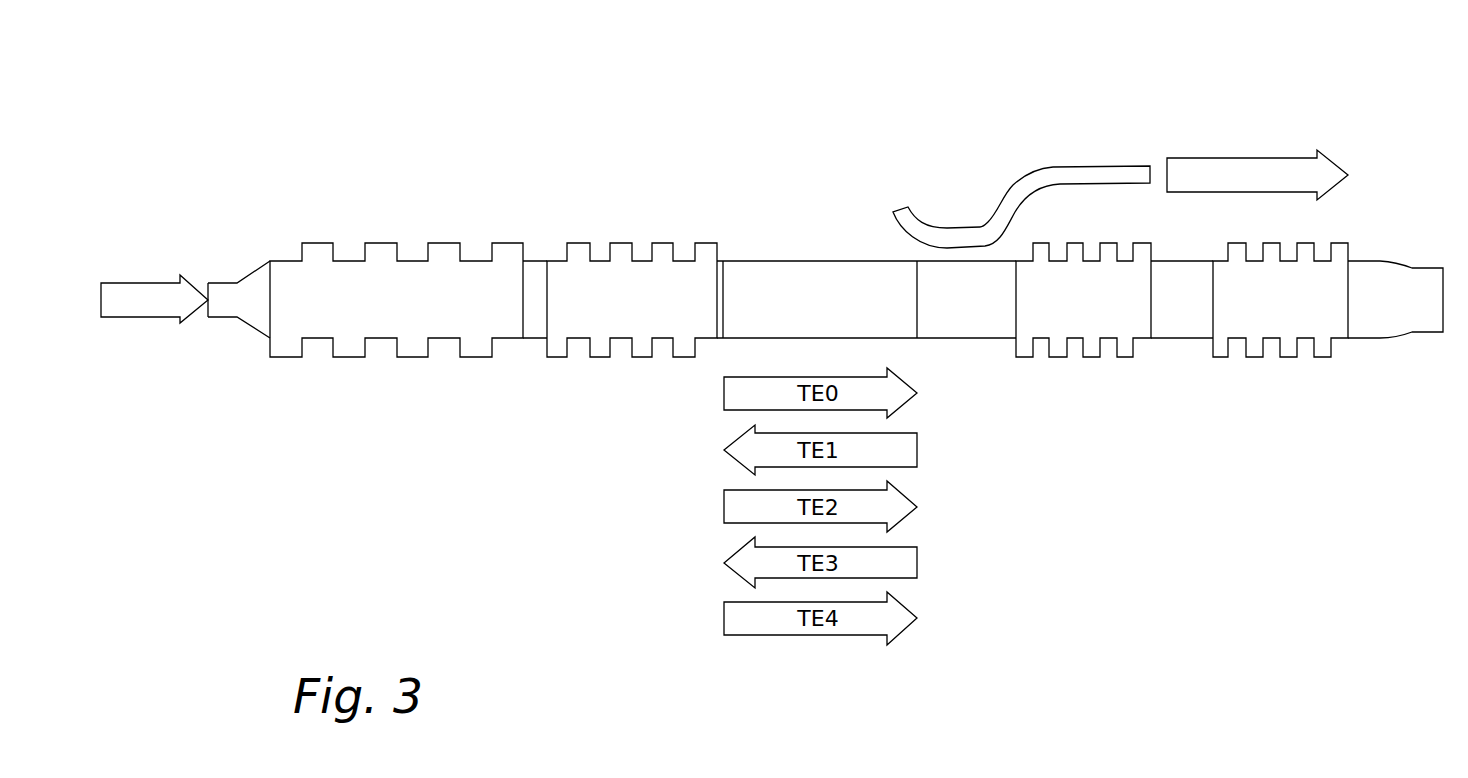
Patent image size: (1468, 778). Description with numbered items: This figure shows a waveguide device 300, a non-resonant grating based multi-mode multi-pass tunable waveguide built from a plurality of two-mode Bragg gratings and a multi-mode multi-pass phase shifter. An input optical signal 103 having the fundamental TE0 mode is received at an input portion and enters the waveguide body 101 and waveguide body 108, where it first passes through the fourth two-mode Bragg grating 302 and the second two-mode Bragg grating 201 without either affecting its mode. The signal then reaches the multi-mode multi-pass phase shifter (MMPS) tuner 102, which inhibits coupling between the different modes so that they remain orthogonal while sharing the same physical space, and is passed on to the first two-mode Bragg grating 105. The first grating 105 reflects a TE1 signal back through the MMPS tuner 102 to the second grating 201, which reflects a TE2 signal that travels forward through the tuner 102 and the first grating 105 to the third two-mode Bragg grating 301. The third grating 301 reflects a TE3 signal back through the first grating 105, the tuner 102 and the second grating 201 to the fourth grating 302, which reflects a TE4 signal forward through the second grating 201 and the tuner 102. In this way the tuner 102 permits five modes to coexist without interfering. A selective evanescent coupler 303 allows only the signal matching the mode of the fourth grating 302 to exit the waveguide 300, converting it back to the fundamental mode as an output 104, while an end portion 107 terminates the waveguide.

The waveguide device 300 is at (224, 99).
The input optical signal 103 is at (121, 281).
The waveguide body 101 is at (232, 311).
The fourth two-mode Bragg grating 302 is at (348, 322).
The waveguide body 108 is at (533, 322).
The second two-mode Bragg grating 201 is at (640, 322).
The multi-mode multi-pass phase shifter tuner 102 is at (817, 276).
The selective evanescent coupler 303 is at (958, 238).
The output waveguide carrying TE0 mode 104 is at (1210, 157).
The first two-mode Bragg grating 105 is at (1058, 322).
The third two-mode Bragg grating 301 is at (1253, 322).
The end portion 107 is at (1400, 302).